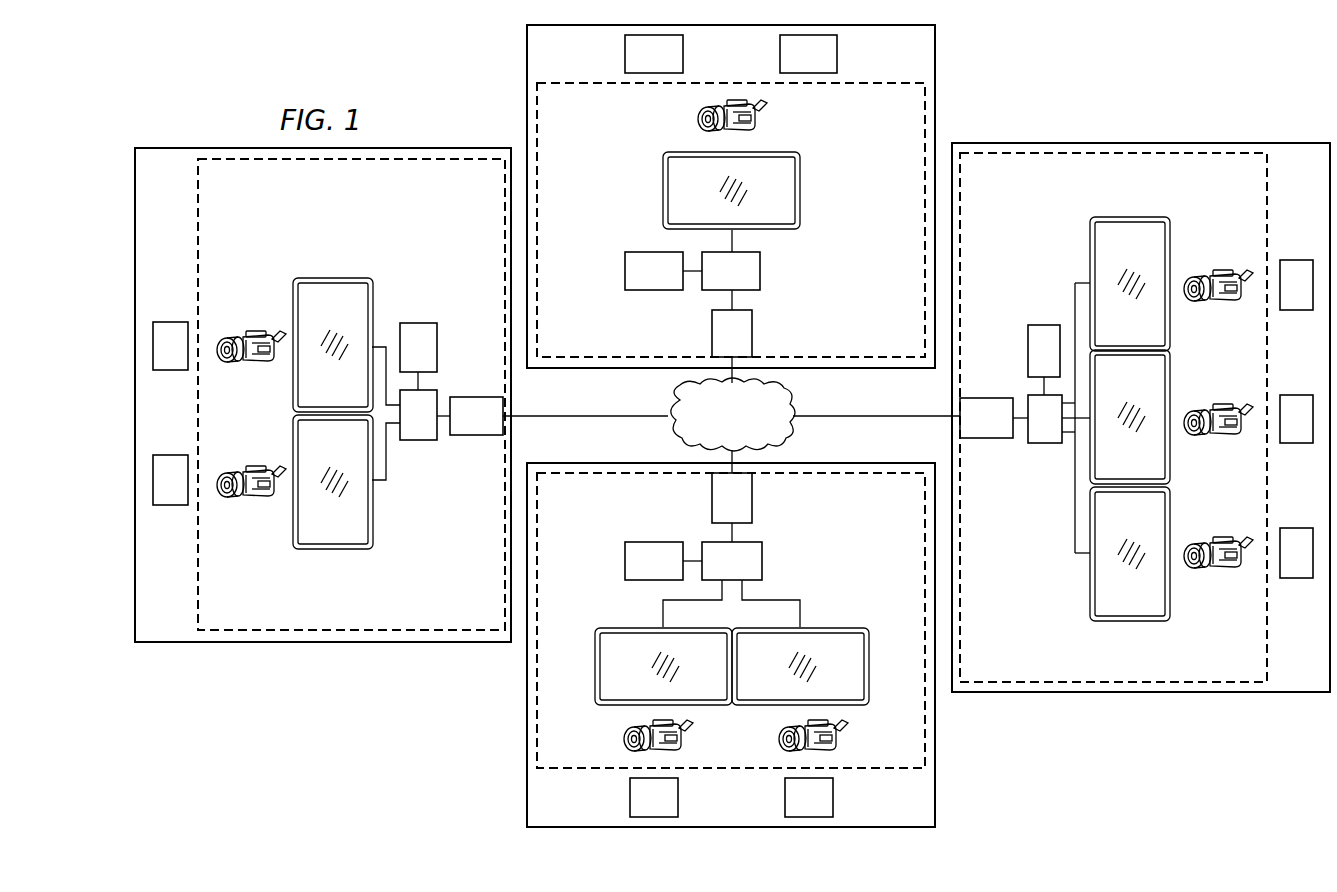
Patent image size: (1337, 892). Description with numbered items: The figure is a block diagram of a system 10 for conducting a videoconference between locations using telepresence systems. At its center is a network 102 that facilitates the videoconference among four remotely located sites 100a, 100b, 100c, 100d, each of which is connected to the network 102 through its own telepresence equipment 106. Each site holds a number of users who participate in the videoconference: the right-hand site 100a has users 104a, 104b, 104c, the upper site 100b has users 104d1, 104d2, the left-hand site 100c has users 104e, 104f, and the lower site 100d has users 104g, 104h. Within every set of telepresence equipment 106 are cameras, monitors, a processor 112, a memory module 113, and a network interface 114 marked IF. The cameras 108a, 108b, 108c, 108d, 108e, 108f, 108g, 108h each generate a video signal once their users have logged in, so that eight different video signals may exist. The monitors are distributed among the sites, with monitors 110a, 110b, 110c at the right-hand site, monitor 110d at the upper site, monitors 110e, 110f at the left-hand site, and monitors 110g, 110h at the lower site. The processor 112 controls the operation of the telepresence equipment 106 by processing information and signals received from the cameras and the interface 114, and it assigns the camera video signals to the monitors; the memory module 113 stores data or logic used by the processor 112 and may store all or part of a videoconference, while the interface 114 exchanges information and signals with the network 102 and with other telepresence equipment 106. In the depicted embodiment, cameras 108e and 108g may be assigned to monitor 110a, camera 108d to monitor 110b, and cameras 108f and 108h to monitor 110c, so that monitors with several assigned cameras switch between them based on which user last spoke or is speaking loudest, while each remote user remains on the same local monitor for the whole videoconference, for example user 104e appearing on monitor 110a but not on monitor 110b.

The system 10 is at (402, 712).
The site 100a is at (1210, 700).
The site 100b is at (940, 116).
The site 100c is at (258, 647).
The site 100d is at (941, 765).
The network 102 is at (788, 438).
The user 104a is at (1297, 578).
The user 104b is at (1297, 443).
The user 104c is at (1295, 260).
The user 104d1 is at (837, 54).
The user 104d2 is at (625, 55).
The user 104e is at (170, 322).
The user 104f is at (165, 505).
The user 104g is at (630, 795).
The user 104h is at (833, 800).
The telepresence equipment 106 is at (415, 215).
The camera 108a is at (1213, 570).
The camera 108b is at (1213, 437).
The camera 108c is at (1228, 268).
The camera 108d is at (768, 112).
The camera 108e is at (254, 330).
The camera 108f is at (248, 497).
The camera 108g is at (623, 736).
The camera 108h is at (852, 740).
The monitor 110a is at (1140, 622).
The monitor 110b is at (1170, 375).
The monitor 110c is at (1140, 217).
The monitor 110d is at (800, 172).
The monitor 110e is at (323, 278).
The monitor 110f is at (322, 550).
The monitor 110g is at (607, 627).
The monitor 110h is at (850, 627).
The processor 112 is at (420, 440).
The memory module 113 is at (420, 323).
The network interface 114 is at (483, 397).